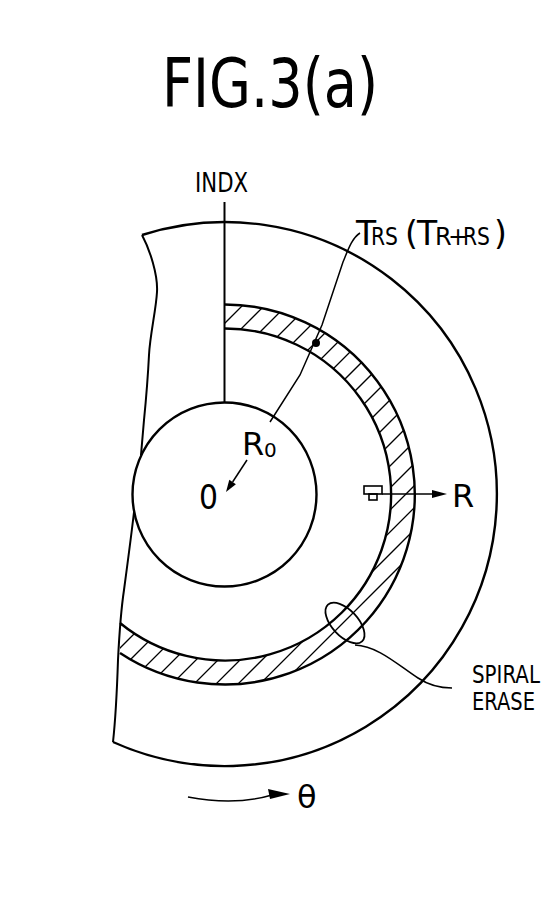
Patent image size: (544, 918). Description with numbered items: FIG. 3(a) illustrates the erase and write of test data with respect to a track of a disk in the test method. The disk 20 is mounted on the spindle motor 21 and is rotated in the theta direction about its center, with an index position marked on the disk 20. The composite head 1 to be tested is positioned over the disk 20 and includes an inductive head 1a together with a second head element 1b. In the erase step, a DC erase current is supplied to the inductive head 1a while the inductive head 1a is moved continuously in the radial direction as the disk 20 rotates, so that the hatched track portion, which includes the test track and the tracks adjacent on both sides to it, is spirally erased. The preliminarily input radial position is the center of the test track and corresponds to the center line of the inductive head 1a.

The disk 20 is at (312, 237).
The spindle motor 21 is at (155, 478).
The composite head 1 is at (383, 484).
The inductive head 1a is at (376, 486).
The erase head 1b is at (375, 500).